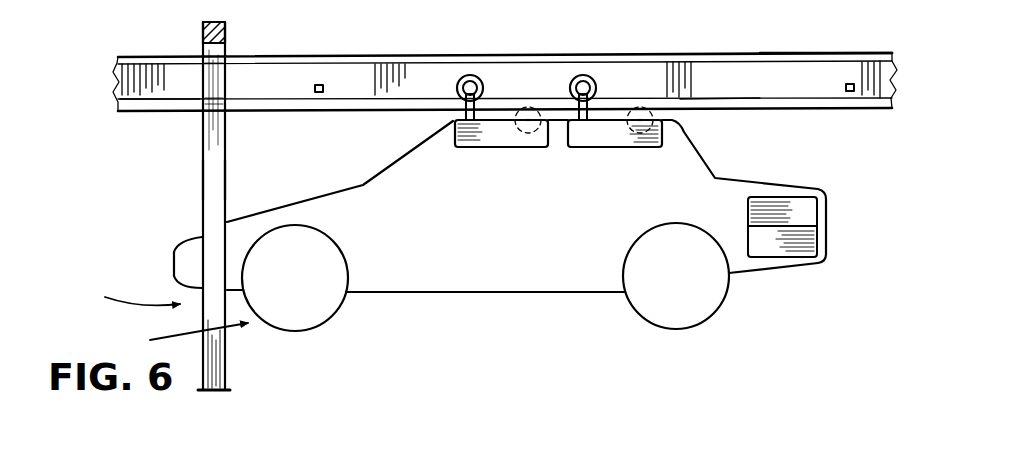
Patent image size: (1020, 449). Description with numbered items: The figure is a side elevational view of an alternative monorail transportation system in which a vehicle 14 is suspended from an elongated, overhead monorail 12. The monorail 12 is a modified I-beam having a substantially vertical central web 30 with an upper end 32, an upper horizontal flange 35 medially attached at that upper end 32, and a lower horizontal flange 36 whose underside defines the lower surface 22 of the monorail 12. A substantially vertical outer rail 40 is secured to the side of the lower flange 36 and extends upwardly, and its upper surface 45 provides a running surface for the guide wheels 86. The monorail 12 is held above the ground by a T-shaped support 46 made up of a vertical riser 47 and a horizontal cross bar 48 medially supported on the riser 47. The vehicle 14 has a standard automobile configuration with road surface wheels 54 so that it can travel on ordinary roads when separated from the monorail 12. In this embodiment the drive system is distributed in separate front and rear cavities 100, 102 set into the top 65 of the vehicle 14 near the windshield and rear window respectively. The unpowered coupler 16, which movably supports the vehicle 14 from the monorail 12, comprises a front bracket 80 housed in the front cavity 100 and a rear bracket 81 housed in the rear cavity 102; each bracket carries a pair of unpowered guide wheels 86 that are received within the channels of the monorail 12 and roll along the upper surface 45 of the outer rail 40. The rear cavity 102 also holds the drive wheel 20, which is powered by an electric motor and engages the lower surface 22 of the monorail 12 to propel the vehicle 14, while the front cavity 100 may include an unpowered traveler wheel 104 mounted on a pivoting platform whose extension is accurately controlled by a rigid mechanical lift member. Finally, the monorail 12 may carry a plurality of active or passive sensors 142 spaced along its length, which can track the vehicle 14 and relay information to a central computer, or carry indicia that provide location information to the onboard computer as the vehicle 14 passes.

The overhead monorail 12 is at (834, 46).
The vehicle 14 is at (500, 235).
The unpowered coupler 16 is at (522, 84).
The drive wheel 20 is at (692, 124).
The lower surface 22 is at (162, 112).
The central web 30 is at (473, 85).
The upper end 32 is at (116, 68).
The upper horizontal flange 35 is at (265, 58).
The lower horizontal flange 36 is at (264, 113).
The outer rail 40 is at (803, 105).
The upper surface of outer rail 45 is at (744, 99).
The T-shaped support 46 is at (234, 186).
The vertical riser 47 is at (202, 212).
The horizontal cross bar 48 is at (226, 24).
The road surface wheels 54 is at (340, 322).
The top of vehicle 65 is at (558, 118).
The front bracket 80 is at (458, 102).
The rear bracket 81 is at (597, 104).
The guide wheels 86 is at (512, 36).
The front cavity 100 is at (488, 131).
The rear cavity 102 is at (616, 146).
The traveler wheel 104 is at (513, 112).
The sensors 142 is at (312, 88).